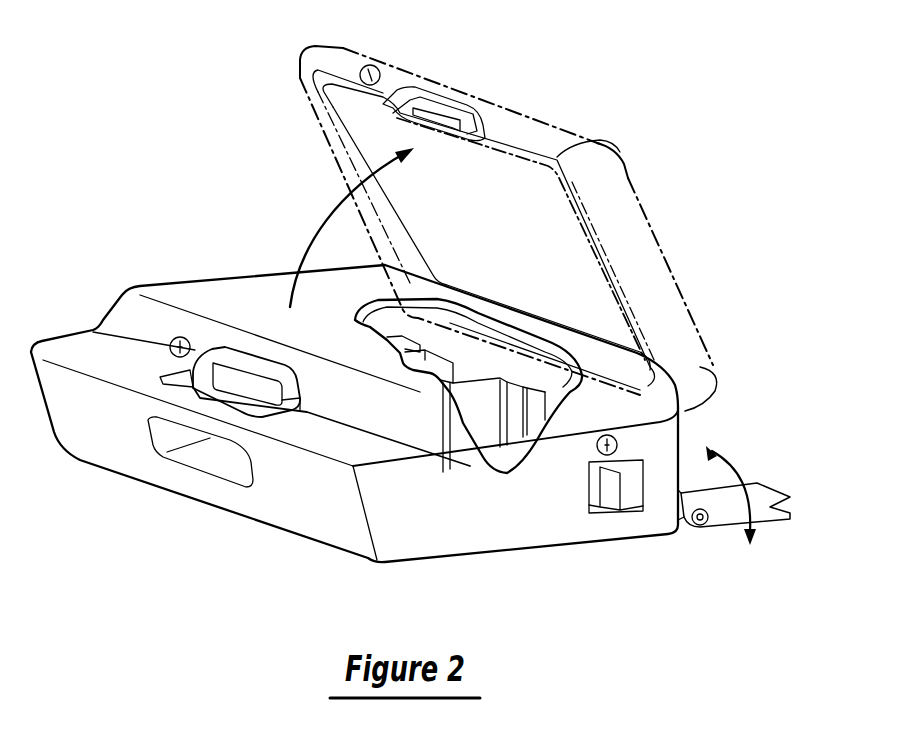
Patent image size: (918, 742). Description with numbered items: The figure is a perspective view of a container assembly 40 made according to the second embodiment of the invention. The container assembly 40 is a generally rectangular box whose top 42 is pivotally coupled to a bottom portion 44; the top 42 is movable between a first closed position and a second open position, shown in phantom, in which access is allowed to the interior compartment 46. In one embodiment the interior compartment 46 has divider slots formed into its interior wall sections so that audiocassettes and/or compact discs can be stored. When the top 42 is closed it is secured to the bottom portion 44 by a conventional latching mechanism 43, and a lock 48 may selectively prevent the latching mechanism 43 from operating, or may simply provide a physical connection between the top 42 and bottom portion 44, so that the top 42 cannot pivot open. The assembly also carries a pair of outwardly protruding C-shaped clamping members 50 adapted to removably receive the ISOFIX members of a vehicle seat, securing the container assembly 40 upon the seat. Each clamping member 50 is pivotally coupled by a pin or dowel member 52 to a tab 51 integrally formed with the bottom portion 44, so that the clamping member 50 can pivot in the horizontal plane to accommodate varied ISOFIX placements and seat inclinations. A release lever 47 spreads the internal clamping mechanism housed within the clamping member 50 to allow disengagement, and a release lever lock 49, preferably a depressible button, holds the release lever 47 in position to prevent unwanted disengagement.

The container assembly 40 is at (681, 166).
The top 42 is at (247, 314).
The latching mechanism 43 is at (237, 383).
The bottom portion 44 is at (438, 528).
The interior compartment 46 is at (462, 428).
The release lever 47 is at (607, 490).
The lock 48 is at (168, 347).
The release lever lock 49 is at (618, 446).
The clamping member 50 is at (733, 520).
The tab 51 is at (683, 494).
The pin 52 is at (703, 525).